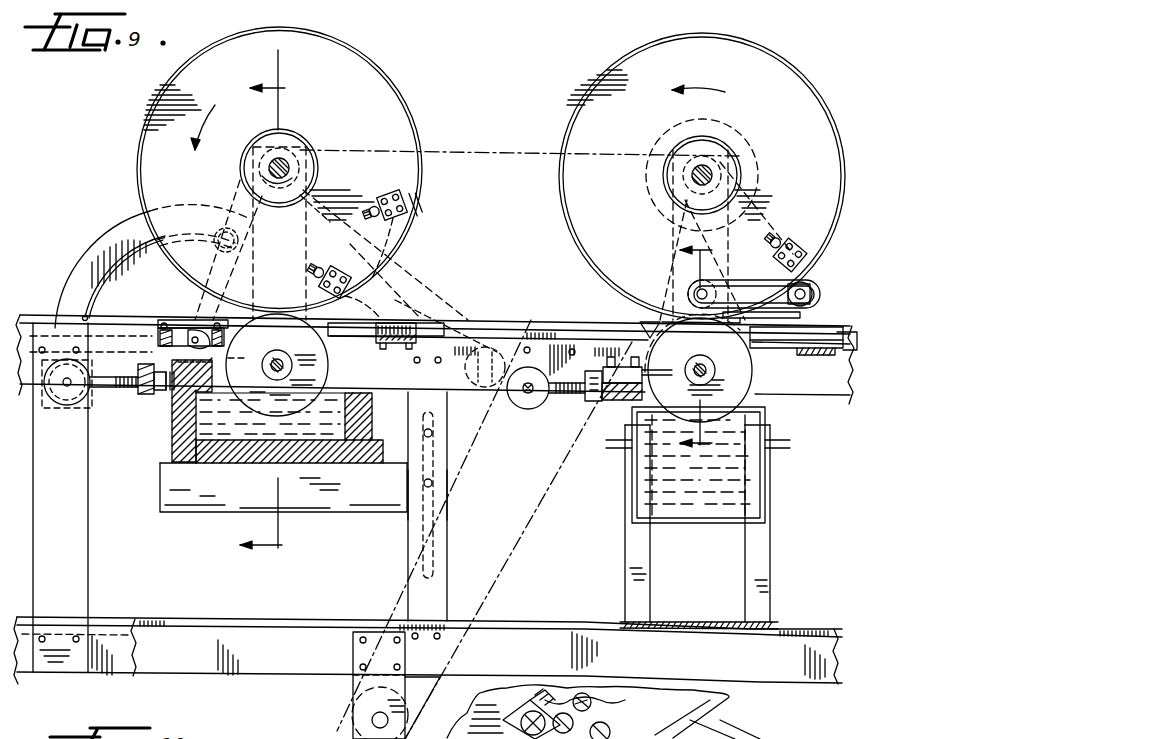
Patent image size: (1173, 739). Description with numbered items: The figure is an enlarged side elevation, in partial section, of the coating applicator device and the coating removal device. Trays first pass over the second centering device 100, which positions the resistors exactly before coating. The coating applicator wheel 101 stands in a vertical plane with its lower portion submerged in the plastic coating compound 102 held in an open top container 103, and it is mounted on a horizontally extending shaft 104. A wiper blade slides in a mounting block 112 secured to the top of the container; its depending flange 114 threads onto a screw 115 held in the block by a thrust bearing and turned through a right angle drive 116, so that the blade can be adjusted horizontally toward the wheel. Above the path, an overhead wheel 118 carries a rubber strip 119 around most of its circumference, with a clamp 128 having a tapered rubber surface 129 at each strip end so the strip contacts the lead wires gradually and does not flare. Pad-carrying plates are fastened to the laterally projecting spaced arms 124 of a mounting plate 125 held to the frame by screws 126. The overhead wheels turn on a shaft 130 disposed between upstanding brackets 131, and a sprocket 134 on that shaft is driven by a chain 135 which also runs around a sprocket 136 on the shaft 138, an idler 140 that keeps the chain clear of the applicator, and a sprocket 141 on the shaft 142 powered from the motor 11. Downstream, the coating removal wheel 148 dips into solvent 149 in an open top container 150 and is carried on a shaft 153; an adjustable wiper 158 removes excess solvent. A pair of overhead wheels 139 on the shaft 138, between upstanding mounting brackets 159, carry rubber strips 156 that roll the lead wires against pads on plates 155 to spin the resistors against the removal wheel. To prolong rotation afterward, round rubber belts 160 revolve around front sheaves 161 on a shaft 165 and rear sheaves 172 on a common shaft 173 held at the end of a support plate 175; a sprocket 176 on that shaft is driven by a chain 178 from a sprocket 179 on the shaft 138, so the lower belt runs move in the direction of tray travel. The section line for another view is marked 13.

The second centering device 100 is at (172, 296).
The coating applicator wheel 101 is at (318, 374).
The plastic coating compound 102 is at (218, 424).
The open top container 103 is at (218, 452).
The shaft 104 is at (278, 360).
The motor 11 is at (278, 306).
The mounting block 112 is at (193, 390).
The depending flange 114 is at (148, 395).
The screw 115 is at (148, 343).
The right angle drive 116 is at (57, 408).
The overhead wheel 118 is at (399, 128).
The rubber strip 119 is at (414, 199).
The laterally projecting spaced arms 124 is at (310, 312).
The mounting plate 125 is at (414, 318).
The screws 126 is at (388, 350).
The clamp 128 is at (390, 222).
The tapered rubber surface 129 is at (403, 208).
The section line 13- 13 is at (711, 348).
The shaft 130 is at (292, 157).
The upstanding brackets 131 is at (322, 228).
The sprocket 134 is at (305, 168).
The chain 135 is at (518, 152).
The sprocket 136 is at (720, 160).
The shaft 138 is at (692, 181).
The overhead wheels 139 is at (612, 82).
The idler 140 is at (527, 322).
The sprocket 141 is at (353, 712).
The shaft 142 is at (377, 718).
The coating removal wheel 148 is at (728, 398).
The solvent 149 is at (748, 500).
The open top container 150 is at (673, 527).
The shaft 153 is at (713, 369).
The plates 155 is at (740, 342).
The rubber strips 156 is at (800, 84).
The adjustable wiper 158 is at (644, 326).
The upstanding mounting brackets 159 is at (656, 206).
The round rubber belts 160 is at (779, 279).
The front sheaves 161 is at (694, 286).
The shaft 165 is at (698, 297).
The rear sheaves 172 is at (816, 292).
The shaft 173 is at (815, 310).
The support plate 175 is at (757, 315).
The sprocket 176 is at (806, 270).
The chain 178 is at (772, 186).
The sprocket 179 is at (660, 131).